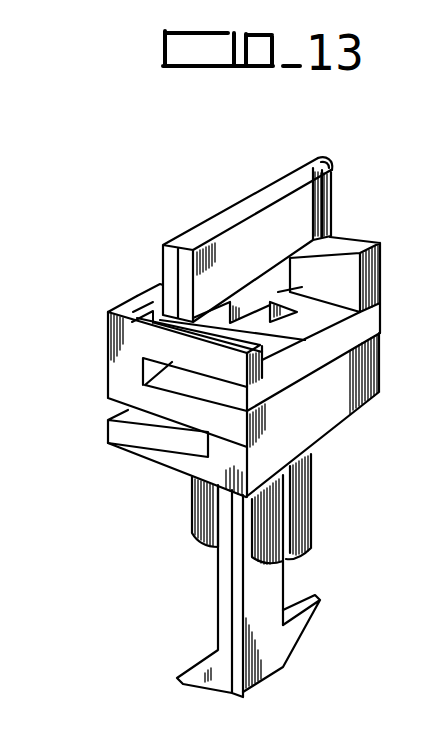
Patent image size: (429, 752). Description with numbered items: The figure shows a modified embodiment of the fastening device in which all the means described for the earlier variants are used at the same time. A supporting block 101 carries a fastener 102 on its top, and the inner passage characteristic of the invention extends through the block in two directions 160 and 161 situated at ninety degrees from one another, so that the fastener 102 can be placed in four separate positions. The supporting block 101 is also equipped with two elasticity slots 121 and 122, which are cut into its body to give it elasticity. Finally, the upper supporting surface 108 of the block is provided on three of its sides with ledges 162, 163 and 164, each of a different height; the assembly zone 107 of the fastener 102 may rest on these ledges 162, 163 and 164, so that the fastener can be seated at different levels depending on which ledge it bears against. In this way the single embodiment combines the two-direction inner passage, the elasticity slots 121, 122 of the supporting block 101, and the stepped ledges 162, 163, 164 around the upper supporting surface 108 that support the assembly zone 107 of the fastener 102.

The supporting block 101 is at (331, 440).
The fastener 102 is at (218, 217).
The assembly zone 107 is at (333, 182).
The upper supporting surface 108 is at (257, 326).
The elasticity slot 121 is at (267, 387).
The elasticity slot 122 is at (137, 418).
The direction of inner passage 160 is at (282, 292).
The direction of inner passage 161 is at (303, 323).
The ledge 162 is at (153, 330).
The ledge 163 is at (155, 293).
The ledge 164 is at (385, 218).